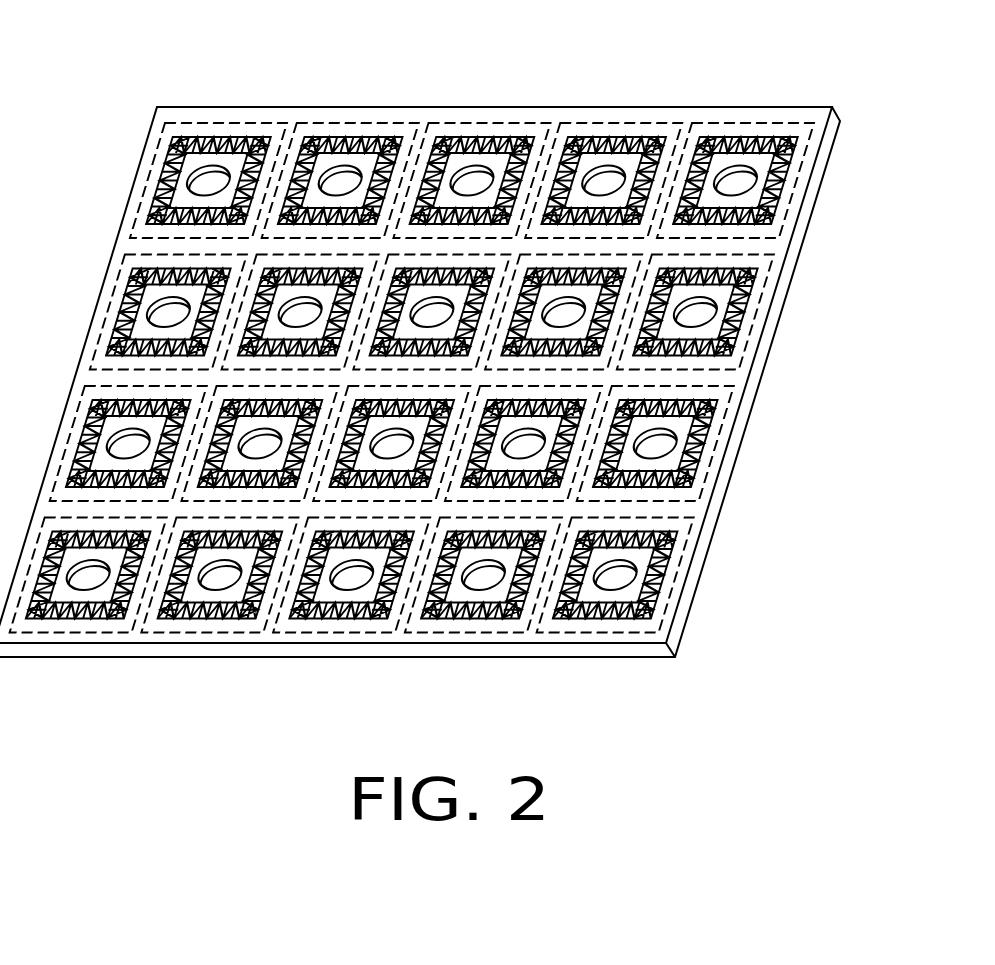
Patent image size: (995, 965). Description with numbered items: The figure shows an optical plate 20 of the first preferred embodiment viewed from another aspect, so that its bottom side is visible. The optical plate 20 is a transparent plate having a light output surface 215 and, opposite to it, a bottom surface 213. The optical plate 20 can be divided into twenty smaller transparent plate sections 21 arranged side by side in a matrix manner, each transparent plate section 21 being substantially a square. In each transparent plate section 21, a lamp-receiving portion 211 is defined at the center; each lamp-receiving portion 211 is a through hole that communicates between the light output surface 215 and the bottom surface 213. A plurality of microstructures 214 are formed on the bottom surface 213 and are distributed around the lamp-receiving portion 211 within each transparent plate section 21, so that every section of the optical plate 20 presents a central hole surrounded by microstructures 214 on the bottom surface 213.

The optical plate 20 is at (128, 66).
The transparent plate section 21 is at (848, 378).
The lamp-receiving portion 211 is at (660, 440).
The bottom surface 213 is at (719, 394).
The microstructures 214 is at (688, 474).
The light output surface 215 is at (716, 550).